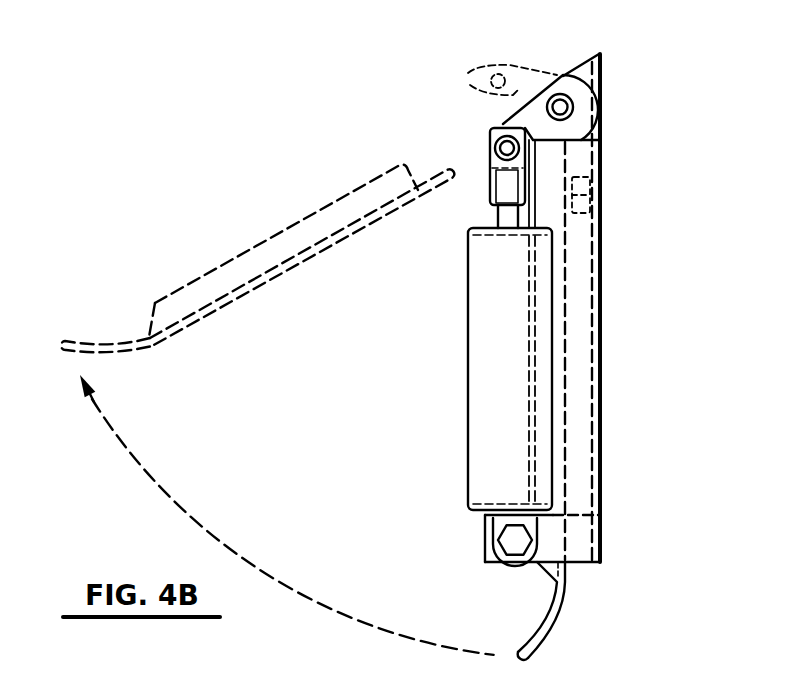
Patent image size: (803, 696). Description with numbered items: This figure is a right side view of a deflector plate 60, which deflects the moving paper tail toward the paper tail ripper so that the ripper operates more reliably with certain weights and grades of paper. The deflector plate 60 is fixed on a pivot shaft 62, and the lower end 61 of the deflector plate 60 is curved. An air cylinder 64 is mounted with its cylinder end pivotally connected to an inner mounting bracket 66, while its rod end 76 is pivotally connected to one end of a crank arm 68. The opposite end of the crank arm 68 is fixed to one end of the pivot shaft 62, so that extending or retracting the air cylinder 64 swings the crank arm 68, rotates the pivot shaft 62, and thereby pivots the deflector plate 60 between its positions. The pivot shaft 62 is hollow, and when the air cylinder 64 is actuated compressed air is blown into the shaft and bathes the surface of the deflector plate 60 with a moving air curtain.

The deflector plate 60 is at (262, 232).
The lower end 61 is at (88, 335).
The pivot shaft 62 is at (583, 103).
The air cylinder 64 is at (478, 348).
The inner mounting bracket 66 is at (603, 417).
The crank arm 68 is at (500, 116).
The rod end 76 is at (492, 213).